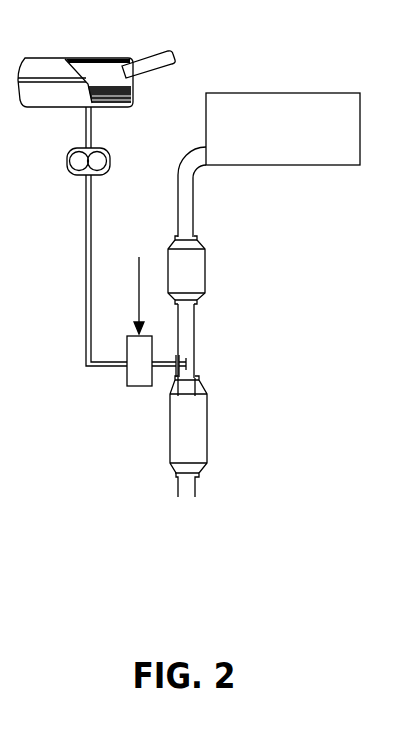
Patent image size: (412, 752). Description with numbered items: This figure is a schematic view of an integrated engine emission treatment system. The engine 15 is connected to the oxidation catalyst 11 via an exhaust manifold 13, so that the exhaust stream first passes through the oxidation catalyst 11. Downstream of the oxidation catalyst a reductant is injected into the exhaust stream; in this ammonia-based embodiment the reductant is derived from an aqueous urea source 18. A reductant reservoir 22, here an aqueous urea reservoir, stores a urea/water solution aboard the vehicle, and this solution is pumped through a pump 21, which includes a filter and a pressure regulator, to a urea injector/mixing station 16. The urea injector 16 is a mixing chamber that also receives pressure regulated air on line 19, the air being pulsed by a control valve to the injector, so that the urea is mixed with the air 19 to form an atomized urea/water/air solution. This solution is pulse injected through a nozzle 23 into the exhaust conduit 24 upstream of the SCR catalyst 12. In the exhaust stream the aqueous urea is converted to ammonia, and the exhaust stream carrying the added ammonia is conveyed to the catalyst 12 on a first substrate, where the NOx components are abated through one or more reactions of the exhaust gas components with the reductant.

The oxidation catalyst 11 is at (207, 262).
The SCR catalyst 12 is at (208, 422).
The exhaust manifold 13 is at (193, 193).
The engine 15 is at (292, 165).
The urea injector/mixing station 16 is at (123, 378).
The aqueous urea source 18 is at (86, 318).
The air line 19 is at (138, 268).
The pump 21 is at (106, 148).
The reductant reservoir 22 is at (90, 57).
The nozzle 23 is at (178, 356).
The exhaust conduit 24 is at (195, 351).